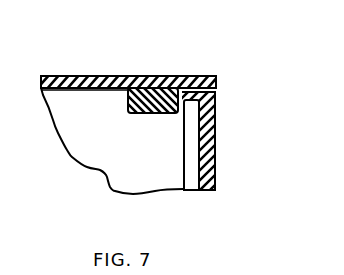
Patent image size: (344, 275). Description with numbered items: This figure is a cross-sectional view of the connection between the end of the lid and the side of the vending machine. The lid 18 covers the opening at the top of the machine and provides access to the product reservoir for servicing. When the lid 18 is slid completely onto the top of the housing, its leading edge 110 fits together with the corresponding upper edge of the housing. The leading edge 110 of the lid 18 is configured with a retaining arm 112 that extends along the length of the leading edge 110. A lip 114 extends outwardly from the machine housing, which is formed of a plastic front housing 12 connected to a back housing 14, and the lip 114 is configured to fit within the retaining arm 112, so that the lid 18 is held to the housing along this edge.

The lid 18 is at (107, 76).
The lip 114 is at (172, 83).
The leading edge 110 is at (217, 80).
The front housing 12 is at (216, 152).
The retaining arm 112 is at (167, 113).
The back housing 14 is at (189, 170).